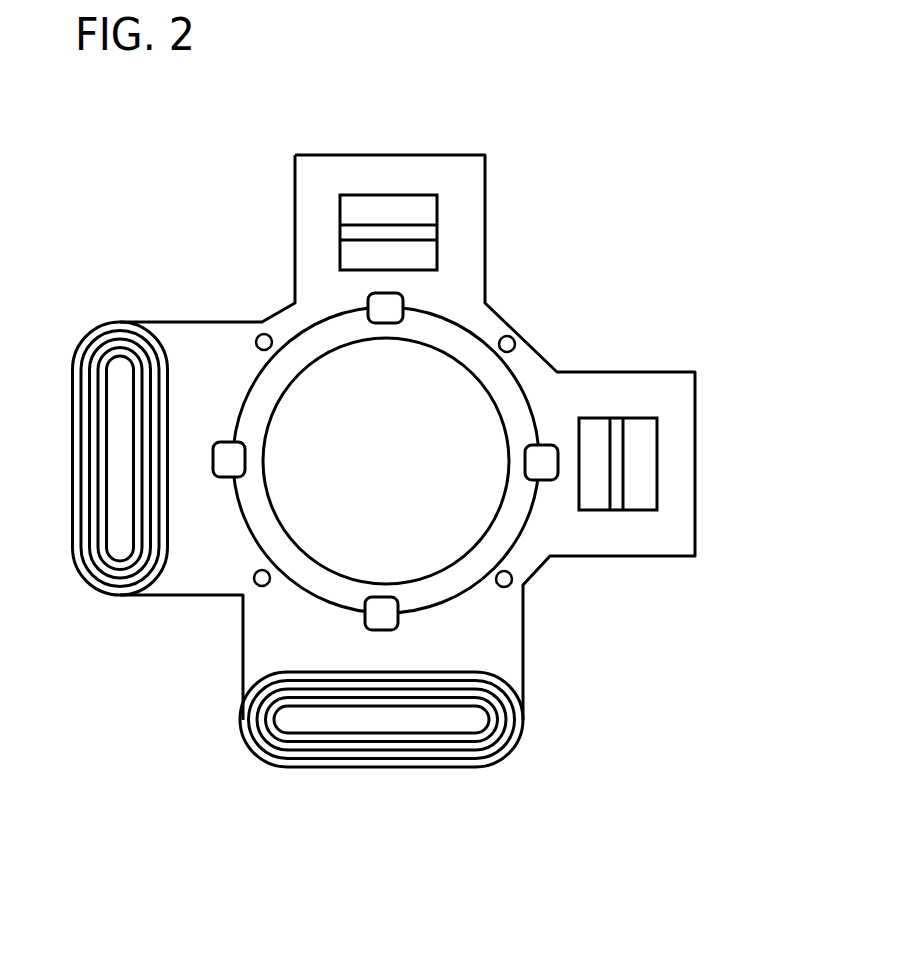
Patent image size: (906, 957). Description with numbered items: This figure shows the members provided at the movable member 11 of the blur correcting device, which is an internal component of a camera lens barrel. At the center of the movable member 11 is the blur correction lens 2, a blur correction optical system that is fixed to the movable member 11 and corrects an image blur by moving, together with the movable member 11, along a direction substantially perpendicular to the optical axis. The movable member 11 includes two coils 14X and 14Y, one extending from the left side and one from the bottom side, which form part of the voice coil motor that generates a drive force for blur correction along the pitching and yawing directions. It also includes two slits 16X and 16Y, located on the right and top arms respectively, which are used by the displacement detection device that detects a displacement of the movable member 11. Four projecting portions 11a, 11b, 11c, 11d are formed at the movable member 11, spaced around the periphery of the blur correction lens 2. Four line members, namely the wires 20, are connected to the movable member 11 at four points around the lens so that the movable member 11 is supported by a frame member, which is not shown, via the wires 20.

The blur correction lens 2 is at (460, 502).
The movable member 11 is at (514, 400).
The projecting portion 11a is at (225, 462).
The projecting portion 11b is at (375, 615).
The projecting portion 11c is at (542, 463).
The projecting portion 11d is at (388, 306).
The coil 14X is at (108, 322).
The coil 14Y is at (413, 767).
The slit 16X is at (618, 445).
The slit 16Y is at (410, 223).
The wires 20 is at (509, 344).